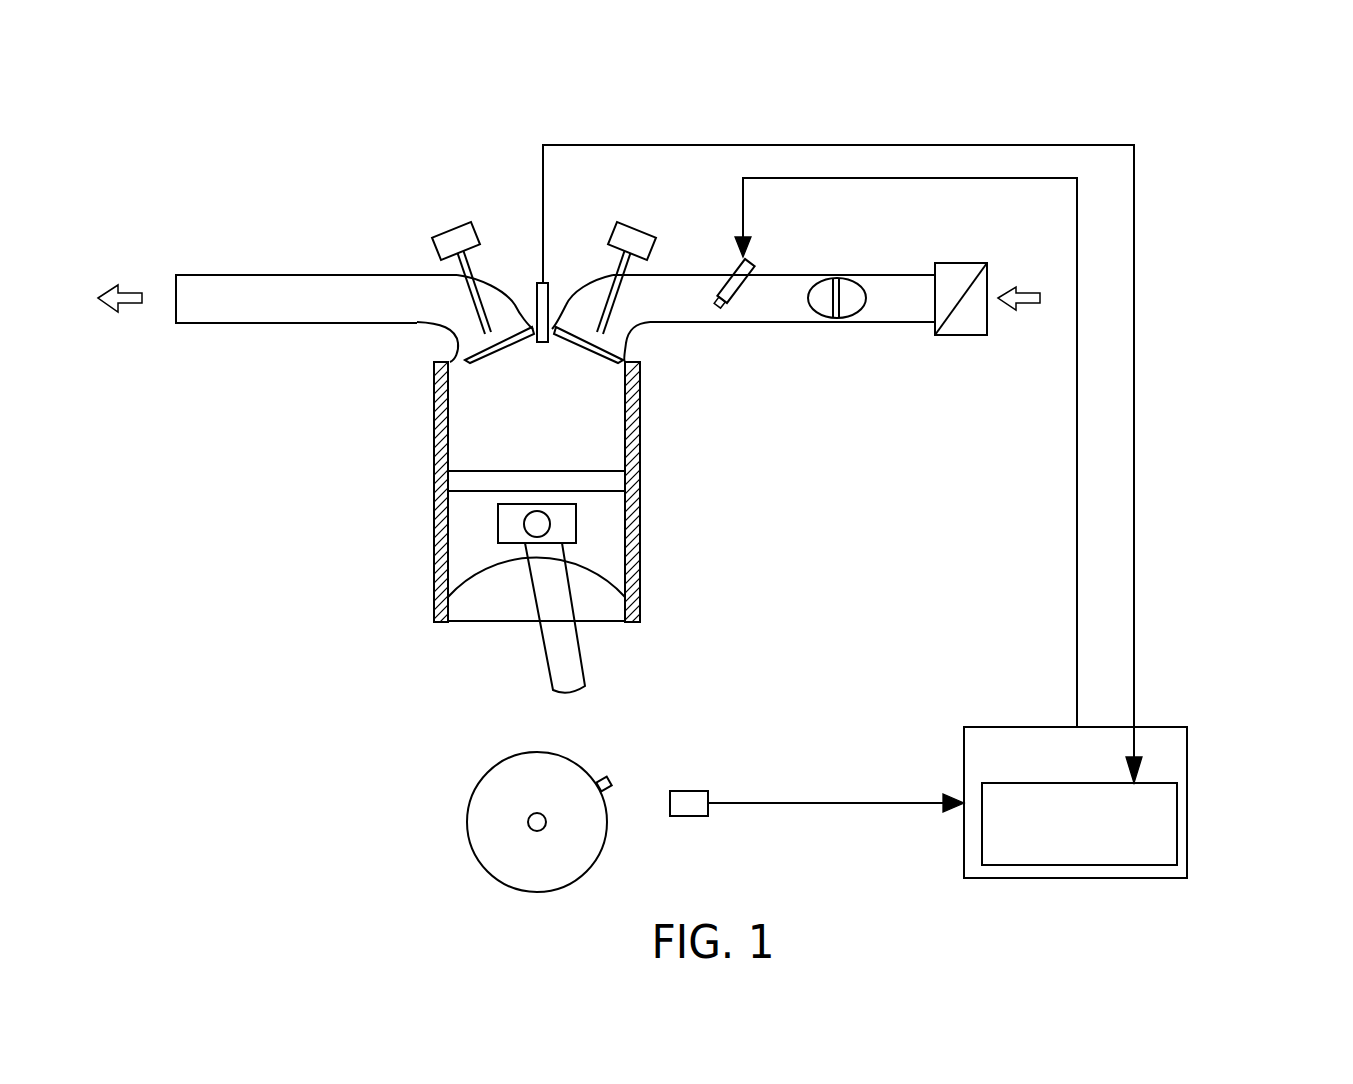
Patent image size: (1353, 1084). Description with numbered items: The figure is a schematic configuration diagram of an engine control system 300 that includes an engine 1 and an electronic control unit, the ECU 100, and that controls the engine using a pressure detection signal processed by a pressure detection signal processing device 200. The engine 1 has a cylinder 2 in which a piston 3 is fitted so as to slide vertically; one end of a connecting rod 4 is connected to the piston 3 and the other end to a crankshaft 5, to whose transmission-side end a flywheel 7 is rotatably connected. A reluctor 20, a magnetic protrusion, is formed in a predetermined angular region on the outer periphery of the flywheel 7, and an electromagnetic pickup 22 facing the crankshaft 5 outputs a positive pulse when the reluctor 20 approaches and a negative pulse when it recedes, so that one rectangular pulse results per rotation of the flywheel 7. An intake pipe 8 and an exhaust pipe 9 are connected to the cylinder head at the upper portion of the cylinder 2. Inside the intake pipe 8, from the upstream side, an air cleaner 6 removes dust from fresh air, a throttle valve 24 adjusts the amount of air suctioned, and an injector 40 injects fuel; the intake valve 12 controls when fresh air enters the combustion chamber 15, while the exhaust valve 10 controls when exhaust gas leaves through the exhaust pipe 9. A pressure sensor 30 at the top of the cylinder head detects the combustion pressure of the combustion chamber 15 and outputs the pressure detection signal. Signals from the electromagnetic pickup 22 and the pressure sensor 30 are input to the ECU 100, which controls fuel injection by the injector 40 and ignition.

The engine 1 is at (682, 511).
The cylinder 2 is at (640, 436).
The piston 3 is at (612, 554).
The connecting rod 4 is at (582, 660).
The crankshaft 5 is at (528, 822).
The air cleaner 6 is at (963, 335).
The flywheel 7 is at (488, 772).
The intake pipe 8 is at (907, 275).
The exhaust pipe 9 is at (307, 274).
The exhaust valve 10 is at (458, 222).
The intake valve 12 is at (642, 218).
The combustion chamber 15 is at (577, 400).
The reluctor 20 is at (606, 780).
The electromagnetic pickup 22 is at (692, 818).
The throttle valve 24 is at (853, 278).
The pressure sensor 30 is at (537, 283).
The injector 40 is at (735, 268).
The electronic control unit (ECU) 100 is at (1182, 727).
The pressure detection signal processing device 200 is at (1177, 803).
The engine control system 300 is at (932, 94).